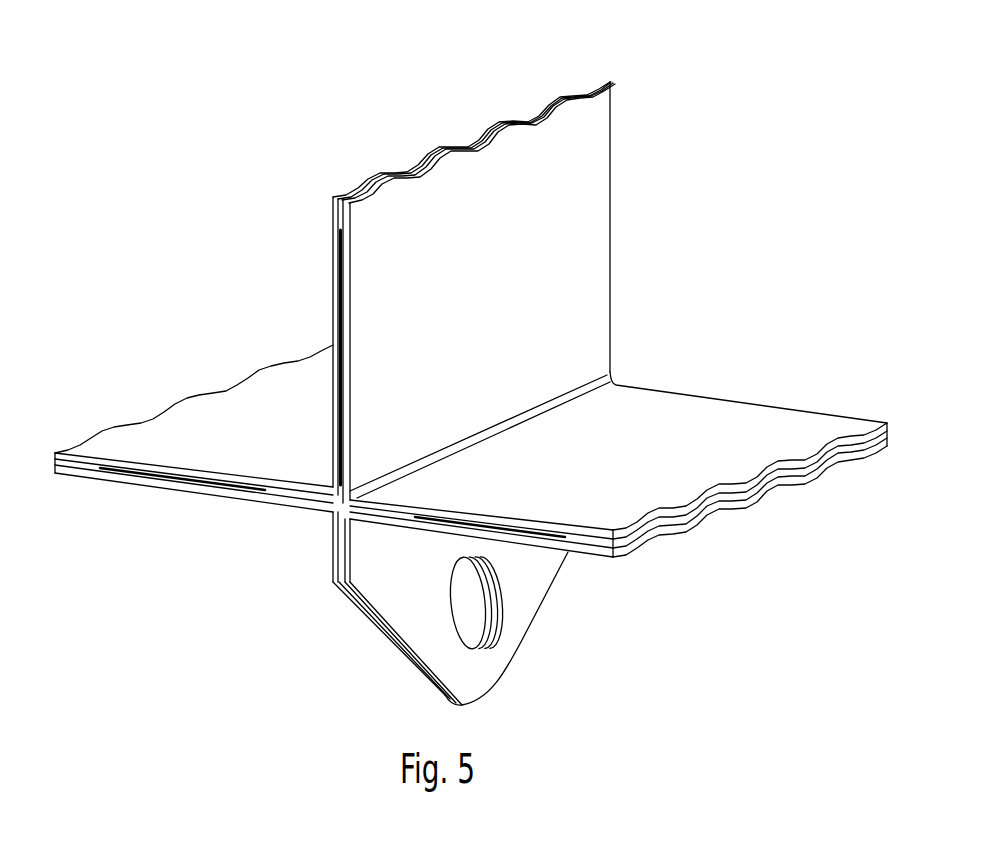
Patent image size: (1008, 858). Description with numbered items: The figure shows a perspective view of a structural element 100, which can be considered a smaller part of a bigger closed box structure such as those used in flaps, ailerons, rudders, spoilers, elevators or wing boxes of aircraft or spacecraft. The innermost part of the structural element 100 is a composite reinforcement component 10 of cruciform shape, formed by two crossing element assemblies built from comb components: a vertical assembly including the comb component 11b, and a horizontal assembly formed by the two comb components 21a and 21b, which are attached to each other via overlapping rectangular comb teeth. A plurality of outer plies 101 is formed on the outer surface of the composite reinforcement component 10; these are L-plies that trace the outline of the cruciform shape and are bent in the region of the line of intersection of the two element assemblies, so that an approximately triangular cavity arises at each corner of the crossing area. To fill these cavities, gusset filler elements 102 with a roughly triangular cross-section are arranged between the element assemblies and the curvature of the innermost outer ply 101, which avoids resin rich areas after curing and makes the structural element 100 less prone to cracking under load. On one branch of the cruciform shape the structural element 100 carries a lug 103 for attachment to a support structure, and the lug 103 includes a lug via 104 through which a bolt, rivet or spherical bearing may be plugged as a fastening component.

The structural element 100 is at (174, 153).
The comb component 11b is at (354, 189).
The outer plies 101 is at (333, 252).
The comb component 21b is at (75, 463).
The comb component 21a is at (283, 497).
The composite reinforcement component 10 is at (352, 494).
The gusset filler element 102 is at (330, 511).
The lug 103 is at (410, 626).
The lug via 104 is at (492, 611).